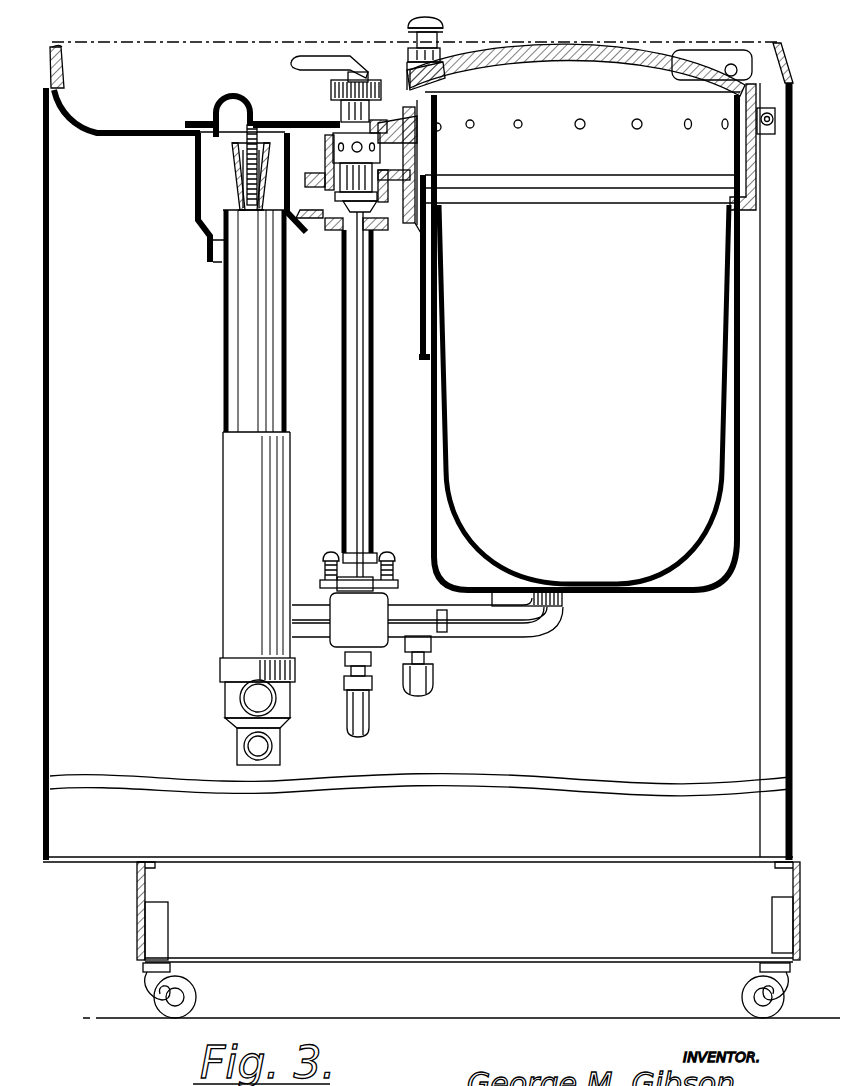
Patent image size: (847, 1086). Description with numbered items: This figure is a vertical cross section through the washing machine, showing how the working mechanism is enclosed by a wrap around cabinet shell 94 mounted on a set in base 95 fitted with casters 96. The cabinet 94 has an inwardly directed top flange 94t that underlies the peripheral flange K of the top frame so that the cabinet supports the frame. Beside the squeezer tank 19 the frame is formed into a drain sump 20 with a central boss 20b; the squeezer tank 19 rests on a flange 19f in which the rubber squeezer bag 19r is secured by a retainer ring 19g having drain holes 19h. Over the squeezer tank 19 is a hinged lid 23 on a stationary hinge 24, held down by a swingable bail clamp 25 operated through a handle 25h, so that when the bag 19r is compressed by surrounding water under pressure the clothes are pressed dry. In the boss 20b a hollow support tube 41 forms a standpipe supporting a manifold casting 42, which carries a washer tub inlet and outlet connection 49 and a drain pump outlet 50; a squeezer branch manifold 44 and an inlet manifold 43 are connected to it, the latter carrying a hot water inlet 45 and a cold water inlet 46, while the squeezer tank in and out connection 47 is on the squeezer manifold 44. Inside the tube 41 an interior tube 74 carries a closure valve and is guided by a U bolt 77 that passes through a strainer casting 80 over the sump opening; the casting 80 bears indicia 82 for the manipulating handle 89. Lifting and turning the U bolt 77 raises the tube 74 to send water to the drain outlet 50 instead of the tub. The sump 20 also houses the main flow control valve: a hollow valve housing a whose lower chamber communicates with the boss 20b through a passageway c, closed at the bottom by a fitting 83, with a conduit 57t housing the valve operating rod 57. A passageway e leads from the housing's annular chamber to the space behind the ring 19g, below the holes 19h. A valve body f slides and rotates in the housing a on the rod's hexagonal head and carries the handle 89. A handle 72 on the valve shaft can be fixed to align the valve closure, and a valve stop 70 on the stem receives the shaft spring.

The wrap around cabinet shell 94 is at (50, 630).
The inwardly directed top flange 94t is at (43, 88).
The peripheral flange K is at (65, 70).
The drain sump 20 is at (100, 122).
The central boss 20b is at (210, 242).
The strainer casting 80 is at (184, 121).
The indicia 82 is at (284, 121).
The U bolt 77 is at (238, 94).
The interior tube 74 is at (268, 208).
The hollow support tube 41 is at (223, 388).
The manifold casting 42 is at (220, 693).
The washer tub inlet and outlet connection 49 is at (250, 692).
The drain pump outlet 50 is at (240, 747).
The handle 72 is at (323, 60).
The manipulating handle 89 is at (337, 86).
The valve housing a is at (328, 143).
The passageway c is at (313, 171).
The valve body f is at (385, 153).
The valve operating rod 57 is at (363, 452).
The conduit 57t is at (376, 345).
The fitting 83 is at (338, 232).
The retainer ring 19g is at (428, 163).
The flange 19f is at (410, 218).
The passageway e is at (428, 178).
The handle 25h is at (443, 23).
The swingable bail clamp 25 is at (445, 50).
The hinged lid 23 is at (598, 42).
The stationary hinge 24 is at (727, 47).
The drain holes 19h is at (432, 120).
The squeezer tank 19 is at (702, 584).
The rubber squeezer bag 19r is at (448, 444).
The valve stop 70 is at (340, 562).
The squeezer branch manifold 44 is at (405, 562).
The inlet manifold 43 is at (373, 610).
The squeezer tank in and out connection 47 is at (522, 630).
The hot water inlet 45 is at (436, 686).
The cold water inlet 46 is at (345, 722).
The set in base 95 is at (295, 943).
The casters 96 is at (192, 992).